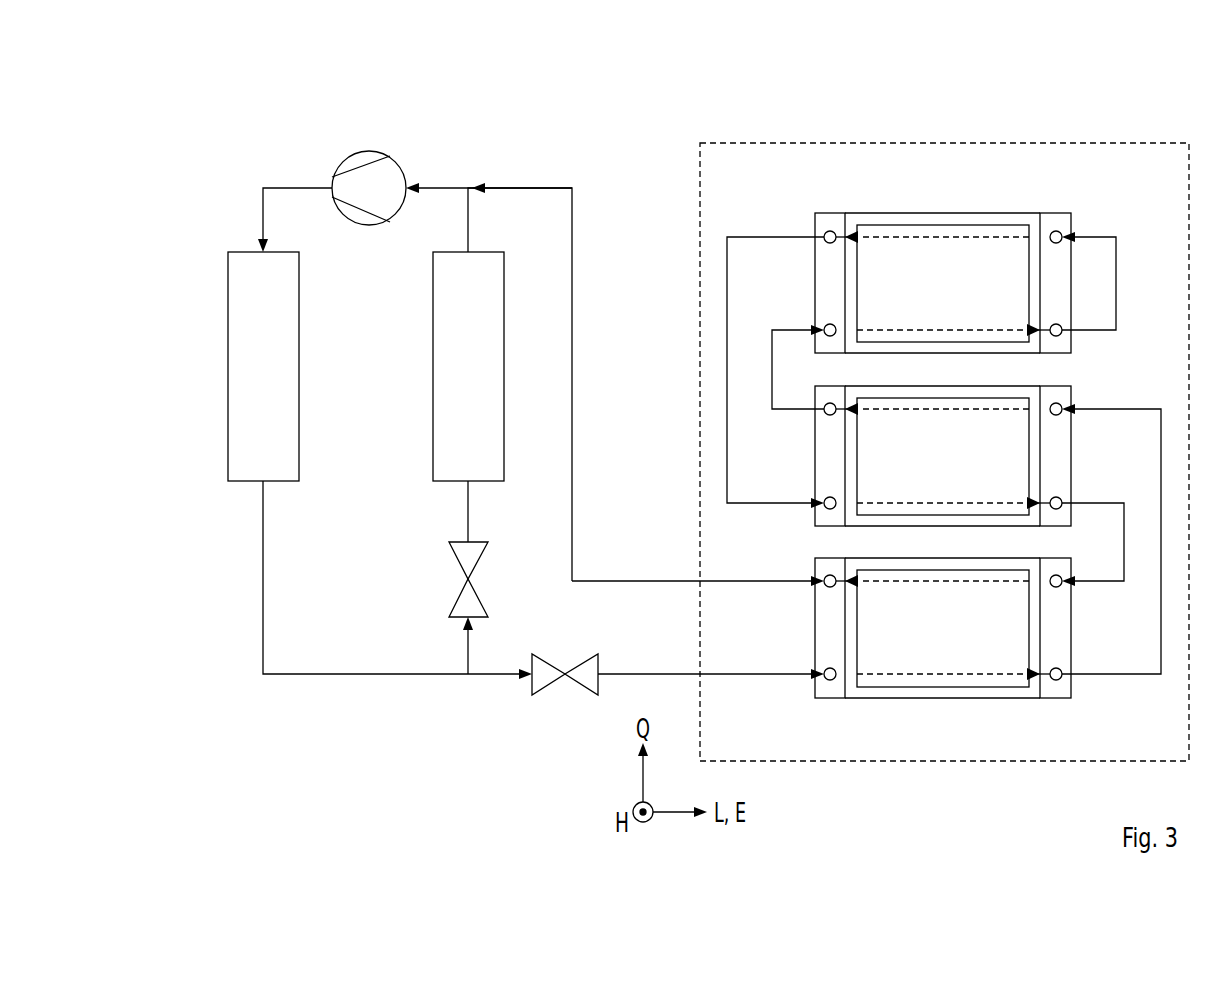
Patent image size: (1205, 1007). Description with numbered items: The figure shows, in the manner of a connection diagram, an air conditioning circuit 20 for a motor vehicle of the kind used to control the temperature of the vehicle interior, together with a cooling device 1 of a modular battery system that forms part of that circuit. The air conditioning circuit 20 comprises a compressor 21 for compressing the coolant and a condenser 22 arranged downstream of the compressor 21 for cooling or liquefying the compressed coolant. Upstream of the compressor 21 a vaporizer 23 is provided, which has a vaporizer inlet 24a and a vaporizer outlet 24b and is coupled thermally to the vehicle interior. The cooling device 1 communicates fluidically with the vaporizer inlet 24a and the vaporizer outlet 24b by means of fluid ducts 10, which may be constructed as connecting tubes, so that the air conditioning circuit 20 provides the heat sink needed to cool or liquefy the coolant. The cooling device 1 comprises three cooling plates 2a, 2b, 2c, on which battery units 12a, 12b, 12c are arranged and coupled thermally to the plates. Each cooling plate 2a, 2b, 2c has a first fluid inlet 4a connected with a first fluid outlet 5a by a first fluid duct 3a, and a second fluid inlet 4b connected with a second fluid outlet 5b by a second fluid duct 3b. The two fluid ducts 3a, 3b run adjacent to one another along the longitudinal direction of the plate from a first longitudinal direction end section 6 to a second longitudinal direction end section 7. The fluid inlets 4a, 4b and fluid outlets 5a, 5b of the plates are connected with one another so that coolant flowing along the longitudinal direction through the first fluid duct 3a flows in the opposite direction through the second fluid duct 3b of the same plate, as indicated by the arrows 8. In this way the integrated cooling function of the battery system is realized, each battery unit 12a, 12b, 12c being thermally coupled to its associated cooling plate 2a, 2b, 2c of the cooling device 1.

The cooling device 1 is at (1074, 138).
The cooling plate 2a is at (1079, 624).
The cooling plate 2b is at (1079, 452).
The cooling plate 2c is at (1079, 281).
The first fluid duct 3a is at (985, 328).
The second fluid duct 3b is at (890, 240).
The first fluid inlet 4a is at (823, 233).
The second fluid inlet 4b is at (1062, 334).
The first fluid outlet 5a is at (1062, 233).
The second fluid outlet 5b is at (823, 327).
The first longitudinal direction end section 6 is at (833, 217).
The second longitudinal direction end section 7 is at (1052, 217).
The arrows 8 is at (943, 455).
The fluid ducts 10 is at (665, 579).
The battery unit 12a is at (929, 620).
The battery unit 12b is at (929, 448).
The battery unit 12c is at (929, 275).
The air conditioning circuit 20 is at (254, 152).
The compressor 21 is at (369, 150).
The condenser 22 is at (253, 370).
The vaporizer 23 is at (458, 370).
The vaporizer inlet 24a is at (470, 510).
The vaporizer outlet 24b is at (470, 222).